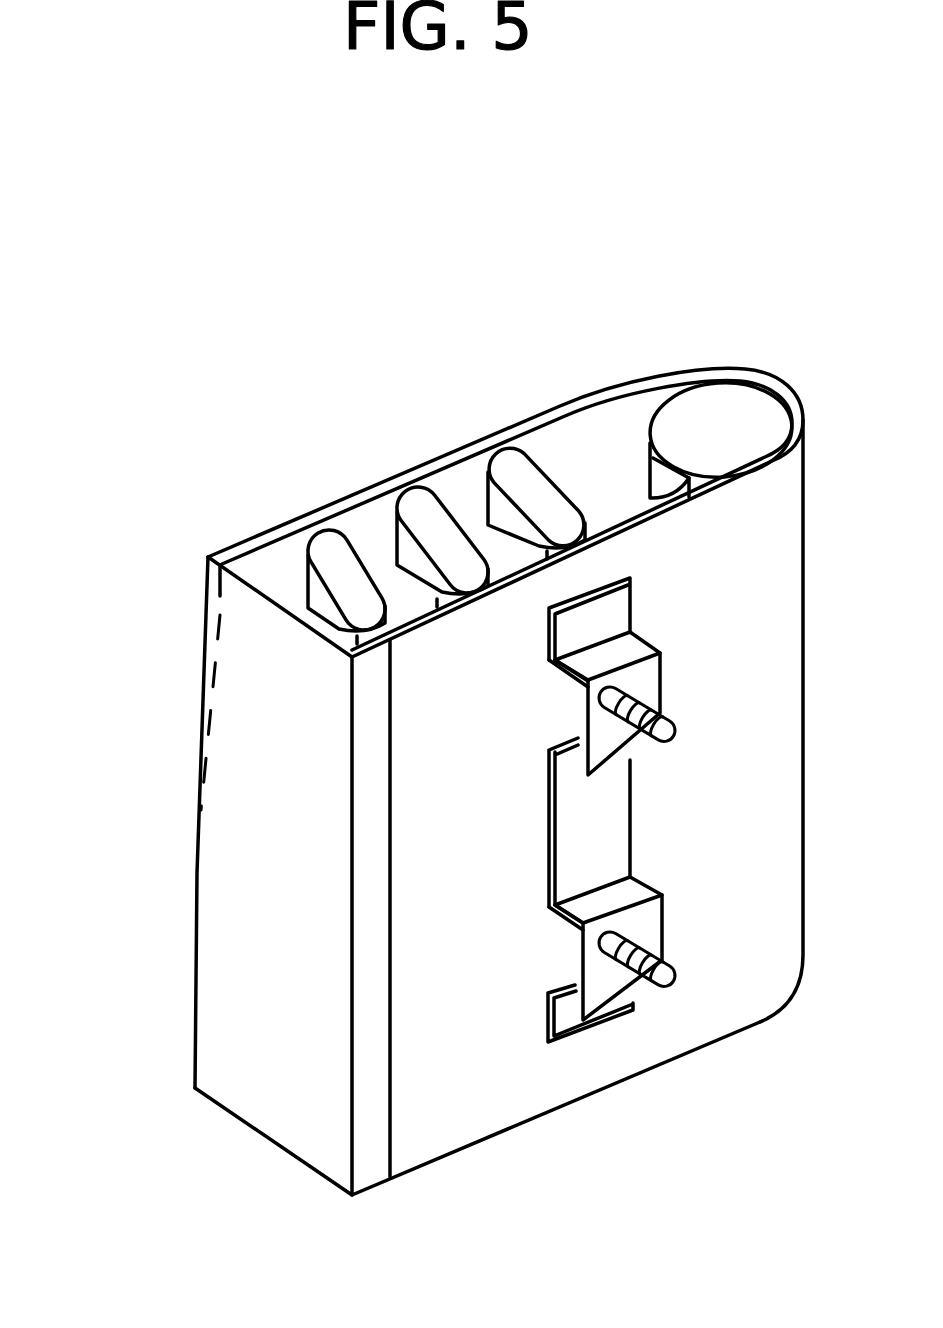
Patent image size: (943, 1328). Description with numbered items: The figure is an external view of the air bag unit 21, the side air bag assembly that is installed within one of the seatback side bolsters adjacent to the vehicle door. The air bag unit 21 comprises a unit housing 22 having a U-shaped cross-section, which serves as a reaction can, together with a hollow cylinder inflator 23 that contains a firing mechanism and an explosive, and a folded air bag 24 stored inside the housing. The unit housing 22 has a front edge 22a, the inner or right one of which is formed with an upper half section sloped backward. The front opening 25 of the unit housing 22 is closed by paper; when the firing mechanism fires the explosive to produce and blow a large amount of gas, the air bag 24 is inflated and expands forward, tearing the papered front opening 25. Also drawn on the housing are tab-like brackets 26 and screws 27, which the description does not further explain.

The air bag unit 21 is at (300, 468).
The unit housing 22 is at (570, 400).
The front edge 22a is at (207, 630).
The hollow cylinder inflator 23 is at (750, 407).
The folded air bag 24 is at (420, 488).
The front opening 25 is at (220, 838).
The mounting tab 26 is at (665, 670).
The screw 27 is at (672, 732).